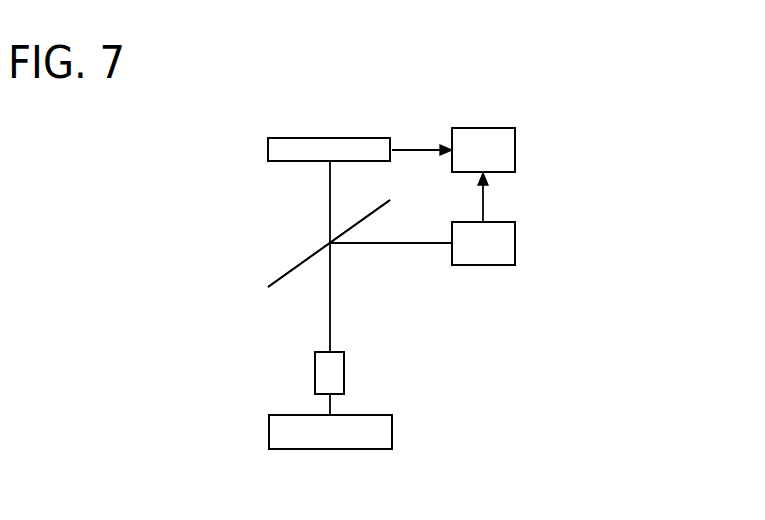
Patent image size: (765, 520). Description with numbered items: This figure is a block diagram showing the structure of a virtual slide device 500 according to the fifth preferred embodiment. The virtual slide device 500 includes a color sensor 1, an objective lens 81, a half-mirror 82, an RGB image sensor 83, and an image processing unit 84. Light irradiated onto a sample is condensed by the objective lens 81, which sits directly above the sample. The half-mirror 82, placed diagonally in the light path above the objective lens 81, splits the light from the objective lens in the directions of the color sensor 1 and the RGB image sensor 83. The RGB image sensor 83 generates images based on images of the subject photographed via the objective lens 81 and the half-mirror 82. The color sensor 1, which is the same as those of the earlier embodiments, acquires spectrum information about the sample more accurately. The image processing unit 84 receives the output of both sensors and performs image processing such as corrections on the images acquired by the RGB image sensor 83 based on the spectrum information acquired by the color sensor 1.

The virtual slide device 500 is at (200, 204).
The RGB image sensor 83 is at (340, 138).
The image processing unit 84 is at (492, 128).
The color sensor 1 is at (493, 222).
The half-mirror 82 is at (305, 260).
The objective lens 81 is at (345, 373).